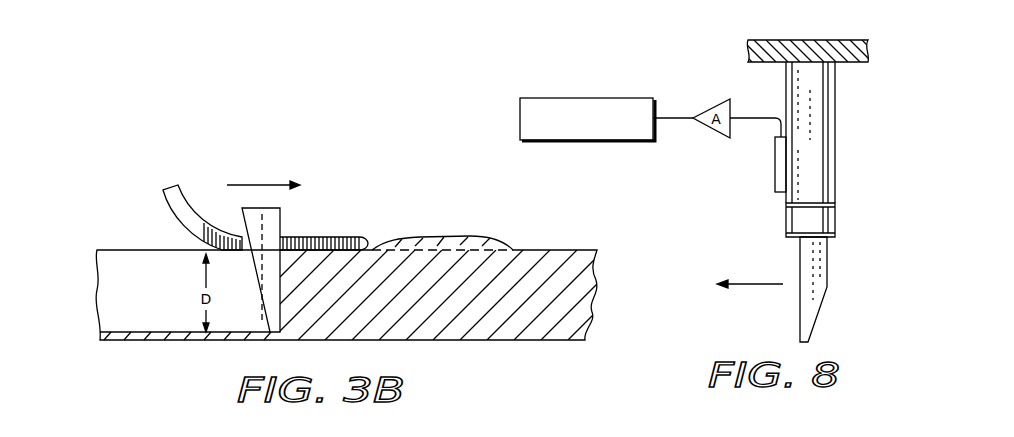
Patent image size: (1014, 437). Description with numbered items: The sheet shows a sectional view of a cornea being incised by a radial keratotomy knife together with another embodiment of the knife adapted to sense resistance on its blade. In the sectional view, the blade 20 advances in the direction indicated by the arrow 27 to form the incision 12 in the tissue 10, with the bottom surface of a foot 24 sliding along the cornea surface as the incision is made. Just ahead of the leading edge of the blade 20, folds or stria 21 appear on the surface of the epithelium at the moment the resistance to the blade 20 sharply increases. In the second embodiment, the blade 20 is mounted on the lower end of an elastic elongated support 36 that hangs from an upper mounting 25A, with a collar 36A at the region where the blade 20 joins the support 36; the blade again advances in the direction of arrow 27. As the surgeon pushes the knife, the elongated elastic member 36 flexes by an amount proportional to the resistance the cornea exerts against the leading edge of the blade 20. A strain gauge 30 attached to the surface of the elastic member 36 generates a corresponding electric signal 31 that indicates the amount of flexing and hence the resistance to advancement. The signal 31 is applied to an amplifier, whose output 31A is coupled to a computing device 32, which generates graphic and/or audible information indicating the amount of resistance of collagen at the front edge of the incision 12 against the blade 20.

In FIG. 3B, the workpiece 10 is at (121, 246).
In FIG. 3B, the incision 12 is at (143, 272).
In FIG. 3B, the blade 20 is at (280, 222).
In FIG. 8, the blade 20 is at (824, 268).
In FIG. 3B, the stria 21 is at (437, 237).
In FIG. 3B, the foot 24 is at (200, 231).
In FIG. 3B, the arrow 27 is at (253, 185).
In FIG. 8, the arrow 27 is at (748, 284).
In FIG. 8, the mounting plate 25A is at (848, 45).
In FIG. 8, the strain gauge 30 is at (775, 171).
In FIG. 8, the signal 31 is at (748, 118).
In FIG. 8, the amplifier output lead 31A is at (675, 118).
In FIG. 8, the computing device 32 is at (623, 98).
In FIG. 8, the elastic elongated support 36 is at (837, 138).
In FIG. 8, the tool holder collar 36A is at (825, 224).